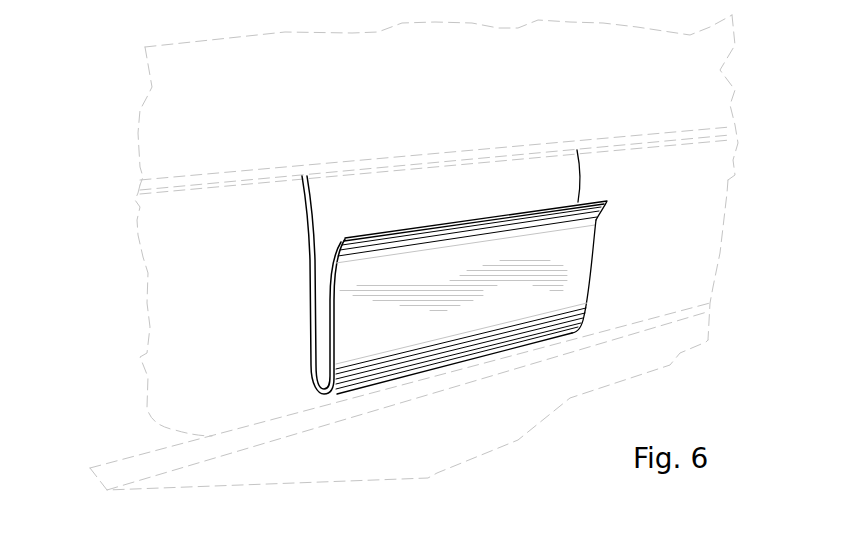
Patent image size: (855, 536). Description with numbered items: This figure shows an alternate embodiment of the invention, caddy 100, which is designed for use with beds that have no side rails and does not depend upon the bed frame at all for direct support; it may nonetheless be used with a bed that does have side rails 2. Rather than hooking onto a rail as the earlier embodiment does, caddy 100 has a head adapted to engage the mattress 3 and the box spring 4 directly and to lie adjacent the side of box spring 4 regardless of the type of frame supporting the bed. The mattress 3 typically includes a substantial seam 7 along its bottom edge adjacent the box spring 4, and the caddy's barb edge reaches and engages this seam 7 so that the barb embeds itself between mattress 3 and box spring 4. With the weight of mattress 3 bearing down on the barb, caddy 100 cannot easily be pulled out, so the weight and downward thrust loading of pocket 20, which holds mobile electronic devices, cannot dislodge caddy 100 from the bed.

The caddy 100 is at (428, 252).
The mattress 3 is at (152, 88).
The seam 7 is at (161, 184).
The box spring 4 is at (160, 273).
The side rail 2 is at (455, 425).
The pocket 20 is at (608, 257).